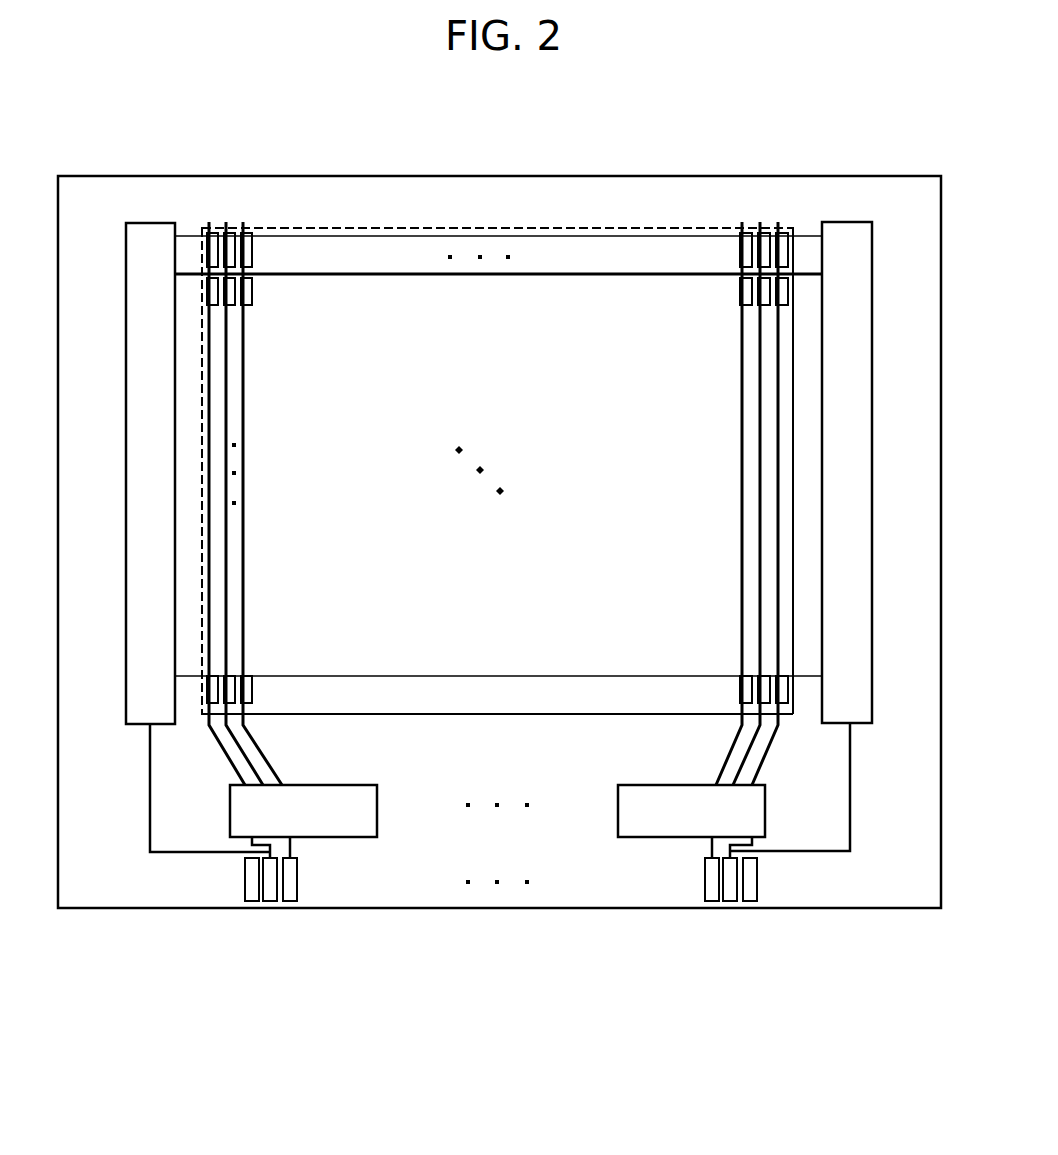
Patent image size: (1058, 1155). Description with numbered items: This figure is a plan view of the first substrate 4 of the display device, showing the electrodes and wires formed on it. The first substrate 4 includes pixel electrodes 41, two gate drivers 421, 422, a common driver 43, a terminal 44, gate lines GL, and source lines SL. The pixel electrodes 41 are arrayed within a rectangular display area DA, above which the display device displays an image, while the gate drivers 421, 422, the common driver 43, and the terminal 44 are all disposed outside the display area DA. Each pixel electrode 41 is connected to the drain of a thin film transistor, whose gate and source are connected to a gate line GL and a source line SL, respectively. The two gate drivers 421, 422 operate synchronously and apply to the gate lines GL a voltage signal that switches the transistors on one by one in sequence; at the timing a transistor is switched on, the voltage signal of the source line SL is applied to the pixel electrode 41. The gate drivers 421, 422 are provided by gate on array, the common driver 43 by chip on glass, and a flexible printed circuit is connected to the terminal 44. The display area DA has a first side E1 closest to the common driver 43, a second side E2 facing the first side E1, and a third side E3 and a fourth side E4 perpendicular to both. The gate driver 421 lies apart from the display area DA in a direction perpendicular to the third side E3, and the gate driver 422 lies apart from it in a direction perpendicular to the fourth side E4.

The first substrate 4 is at (895, 908).
The gate driver 421 is at (150, 223).
The gate driver 422 is at (845, 222).
The pixel electrode 41 is at (254, 250).
The common driver 43 is at (345, 837).
The terminal 44 is at (290, 901).
The gate line GL is at (194, 236).
The source line SL is at (245, 340).
The display area DA is at (792, 228).
The first side E1 is at (612, 716).
The second side E2 is at (617, 228).
The third side E3 is at (200, 595).
The fourth side E4 is at (793, 592).